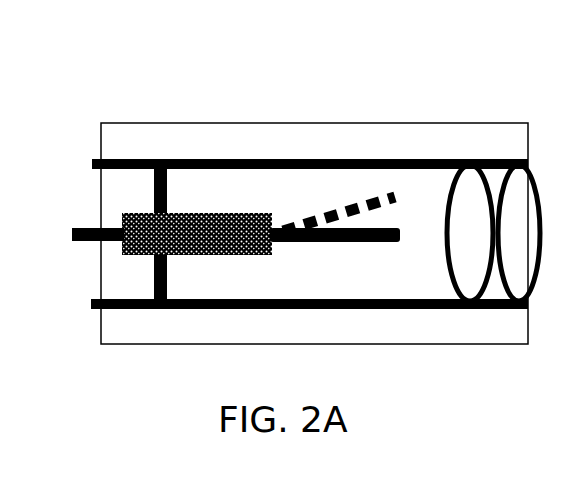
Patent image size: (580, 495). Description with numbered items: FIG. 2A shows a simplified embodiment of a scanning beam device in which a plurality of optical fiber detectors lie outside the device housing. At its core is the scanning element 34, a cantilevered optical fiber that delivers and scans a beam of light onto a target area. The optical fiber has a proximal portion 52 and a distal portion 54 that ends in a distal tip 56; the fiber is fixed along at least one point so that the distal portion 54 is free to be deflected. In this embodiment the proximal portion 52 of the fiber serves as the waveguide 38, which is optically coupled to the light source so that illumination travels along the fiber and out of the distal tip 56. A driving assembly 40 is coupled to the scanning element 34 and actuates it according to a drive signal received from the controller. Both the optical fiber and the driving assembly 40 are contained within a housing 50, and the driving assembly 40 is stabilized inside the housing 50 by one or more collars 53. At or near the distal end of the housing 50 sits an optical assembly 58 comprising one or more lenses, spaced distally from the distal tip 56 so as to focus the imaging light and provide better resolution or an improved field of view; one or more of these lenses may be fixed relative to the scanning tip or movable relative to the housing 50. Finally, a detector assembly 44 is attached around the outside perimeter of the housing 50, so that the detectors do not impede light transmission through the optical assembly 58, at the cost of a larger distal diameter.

The scanning element 34 is at (297, 183).
The waveguide 38 is at (72, 198).
The driving assembly 40 is at (196, 186).
The detector assembly 44 is at (484, 131).
The housing 50 is at (350, 160).
The proximal portion 52 is at (79, 242).
The collar 53 is at (150, 296).
The distal portion 54 is at (352, 241).
The distal tip 56 is at (400, 234).
The optical assembly 58 is at (522, 242).